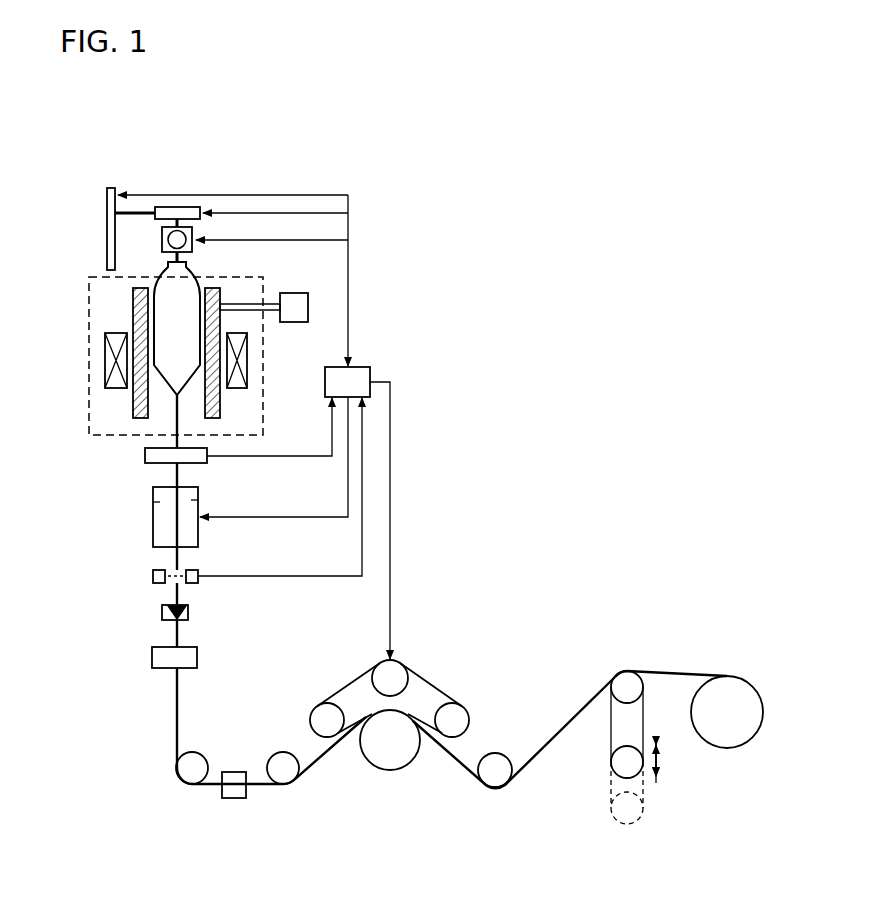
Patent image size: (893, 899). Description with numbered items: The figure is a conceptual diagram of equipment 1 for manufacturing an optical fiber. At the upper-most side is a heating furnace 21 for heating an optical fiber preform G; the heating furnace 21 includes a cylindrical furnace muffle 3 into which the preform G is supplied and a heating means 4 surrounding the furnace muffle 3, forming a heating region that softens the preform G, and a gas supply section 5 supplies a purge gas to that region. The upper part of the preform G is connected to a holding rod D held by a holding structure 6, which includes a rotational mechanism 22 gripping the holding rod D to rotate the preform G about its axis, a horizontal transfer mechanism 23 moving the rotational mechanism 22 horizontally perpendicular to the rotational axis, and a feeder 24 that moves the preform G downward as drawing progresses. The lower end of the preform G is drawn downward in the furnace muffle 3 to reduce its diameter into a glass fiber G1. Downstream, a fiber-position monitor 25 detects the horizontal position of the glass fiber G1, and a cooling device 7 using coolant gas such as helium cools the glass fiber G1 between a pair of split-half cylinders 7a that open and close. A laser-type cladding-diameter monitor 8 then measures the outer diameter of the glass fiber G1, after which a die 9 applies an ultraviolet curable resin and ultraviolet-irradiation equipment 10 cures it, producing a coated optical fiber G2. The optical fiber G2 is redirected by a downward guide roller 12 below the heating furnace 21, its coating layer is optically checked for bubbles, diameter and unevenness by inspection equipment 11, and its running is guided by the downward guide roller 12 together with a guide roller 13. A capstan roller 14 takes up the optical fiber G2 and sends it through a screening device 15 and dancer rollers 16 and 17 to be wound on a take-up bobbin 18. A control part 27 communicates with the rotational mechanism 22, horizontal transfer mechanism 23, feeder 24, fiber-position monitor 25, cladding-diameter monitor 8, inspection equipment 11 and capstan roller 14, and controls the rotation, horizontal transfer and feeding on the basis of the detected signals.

The equipment for manufacturing an optical fiber 1 is at (418, 425).
The furnace muffle 3 is at (215, 402).
The heating means 4 is at (243, 355).
The gas supply section 5 is at (305, 305).
The holding structure 6 is at (218, 198).
The cooling device 7 is at (155, 525).
The split-half cylinders 7a is at (157, 502).
The cladding-diameter monitor 8 is at (153, 576).
The die 9 is at (162, 612).
The ultraviolet-irradiation equipment 10 is at (152, 657).
The inspection equipment 11 is at (232, 798).
The downward guide roller 12 is at (192, 760).
The guide roller 13 is at (283, 757).
The capstan roller 14 is at (437, 680).
The screening device 15 is at (500, 760).
The dancer roller 16 is at (627, 680).
The dancer roller 17 is at (617, 762).
The take-up bobbin 18 is at (727, 690).
The heating furnace 21 is at (88, 348).
The rotational mechanism 22 is at (162, 247).
The horizontal transfer mechanism 23 is at (178, 207).
The feeder 24 is at (107, 210).
The fiber-position monitor 25 is at (145, 455).
The control part 27 is at (352, 369).
The holding rod D is at (185, 262).
The optical fiber preform G is at (192, 290).
The glass fiber G1 is at (178, 470).
The optical fiber G2 is at (176, 725).